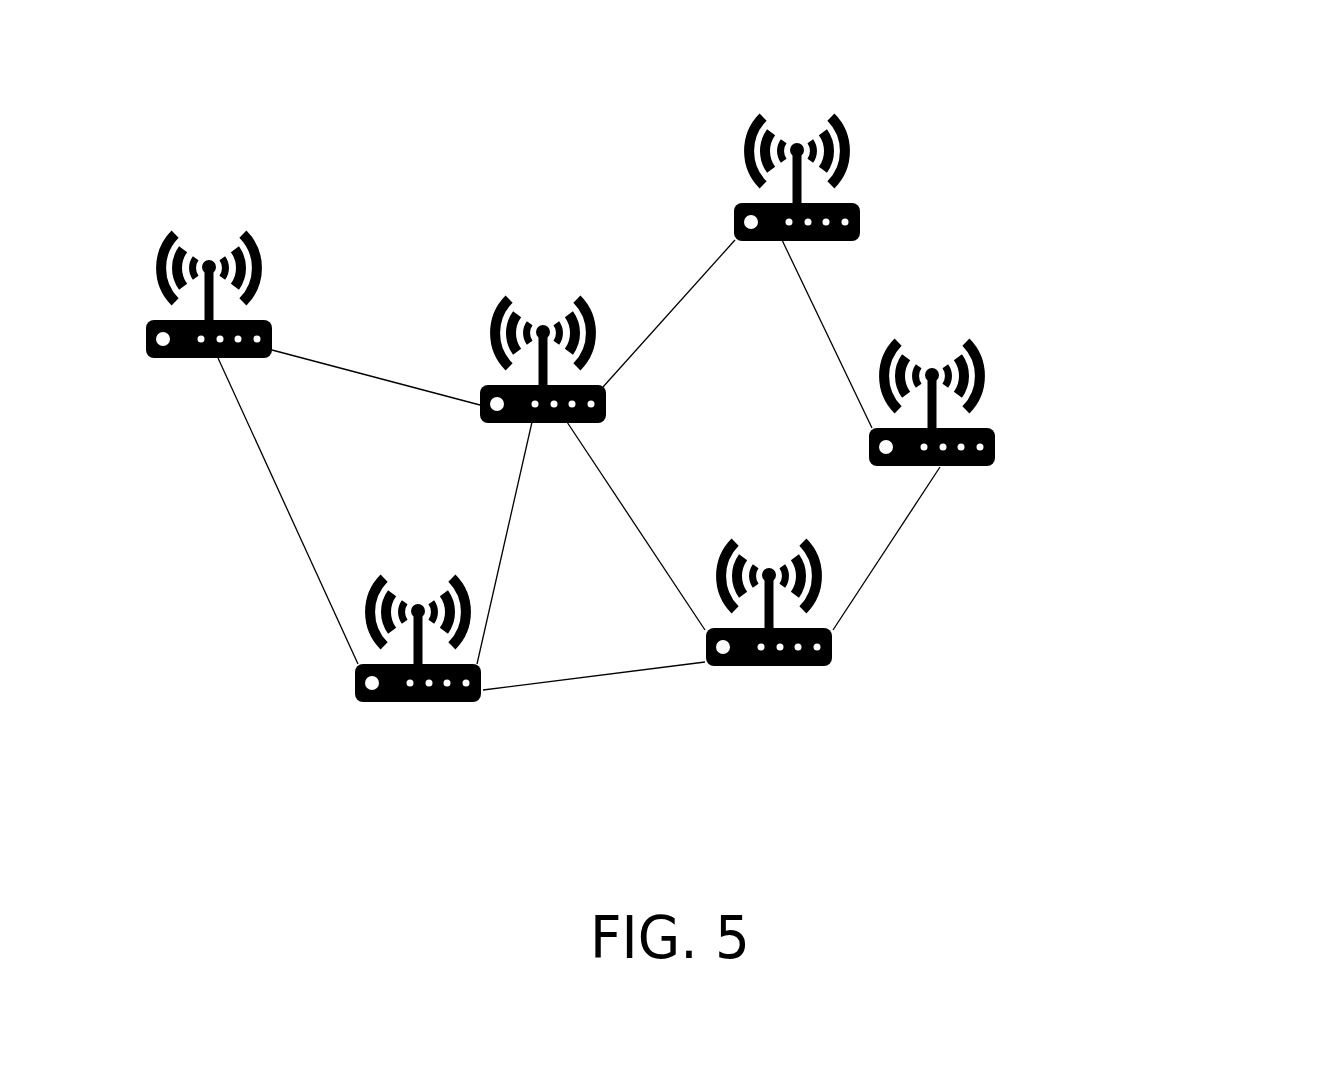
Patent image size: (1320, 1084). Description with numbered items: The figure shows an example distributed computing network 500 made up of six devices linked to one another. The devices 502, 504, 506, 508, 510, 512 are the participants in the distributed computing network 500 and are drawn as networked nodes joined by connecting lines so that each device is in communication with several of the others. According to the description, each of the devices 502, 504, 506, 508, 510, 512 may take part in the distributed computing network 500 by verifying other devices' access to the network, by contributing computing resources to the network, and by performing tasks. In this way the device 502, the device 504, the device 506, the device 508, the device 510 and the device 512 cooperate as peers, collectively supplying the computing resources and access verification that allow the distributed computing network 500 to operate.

The distributed computing network 500 is at (1186, 136).
The device 502 is at (133, 346).
The device 504 is at (346, 691).
The device 506 is at (656, 411).
The device 508 is at (888, 658).
The device 510 is at (1044, 458).
The device 512 is at (909, 230).